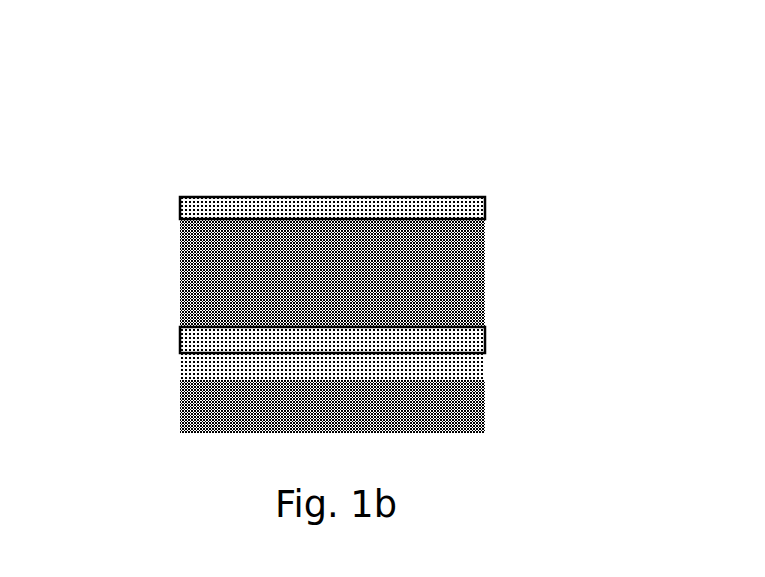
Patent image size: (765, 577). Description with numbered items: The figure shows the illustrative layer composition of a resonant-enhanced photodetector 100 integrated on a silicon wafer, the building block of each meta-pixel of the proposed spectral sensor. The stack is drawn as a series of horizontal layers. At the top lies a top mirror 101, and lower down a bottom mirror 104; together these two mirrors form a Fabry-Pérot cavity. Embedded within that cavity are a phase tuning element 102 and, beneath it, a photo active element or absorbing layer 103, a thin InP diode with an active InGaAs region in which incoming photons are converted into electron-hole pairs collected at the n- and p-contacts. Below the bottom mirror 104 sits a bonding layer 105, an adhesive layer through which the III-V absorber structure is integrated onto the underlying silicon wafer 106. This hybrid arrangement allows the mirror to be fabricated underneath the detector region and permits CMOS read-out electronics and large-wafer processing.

The layered structure 100 is at (135, 163).
The top mirror 101 is at (484, 209).
The phase tuning element 102 is at (484, 250).
The absorbing layer 103 is at (484, 300).
The bottom mirror 104 is at (484, 343).
The bonding layer 105 is at (483, 368).
The silicon wafer 106 is at (483, 410).